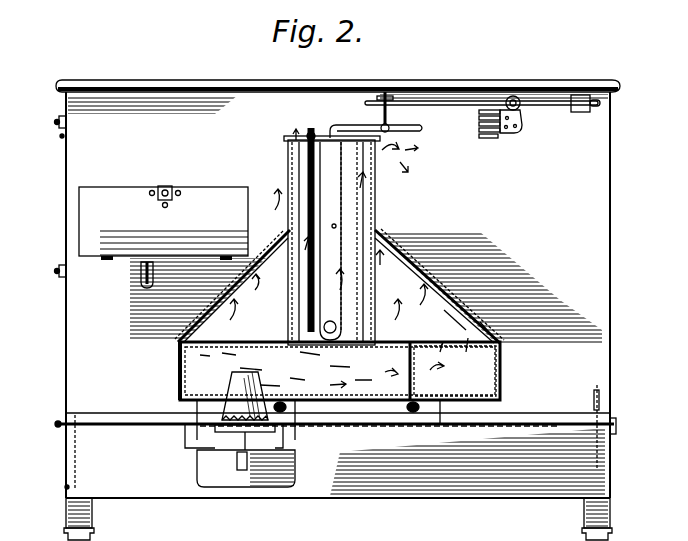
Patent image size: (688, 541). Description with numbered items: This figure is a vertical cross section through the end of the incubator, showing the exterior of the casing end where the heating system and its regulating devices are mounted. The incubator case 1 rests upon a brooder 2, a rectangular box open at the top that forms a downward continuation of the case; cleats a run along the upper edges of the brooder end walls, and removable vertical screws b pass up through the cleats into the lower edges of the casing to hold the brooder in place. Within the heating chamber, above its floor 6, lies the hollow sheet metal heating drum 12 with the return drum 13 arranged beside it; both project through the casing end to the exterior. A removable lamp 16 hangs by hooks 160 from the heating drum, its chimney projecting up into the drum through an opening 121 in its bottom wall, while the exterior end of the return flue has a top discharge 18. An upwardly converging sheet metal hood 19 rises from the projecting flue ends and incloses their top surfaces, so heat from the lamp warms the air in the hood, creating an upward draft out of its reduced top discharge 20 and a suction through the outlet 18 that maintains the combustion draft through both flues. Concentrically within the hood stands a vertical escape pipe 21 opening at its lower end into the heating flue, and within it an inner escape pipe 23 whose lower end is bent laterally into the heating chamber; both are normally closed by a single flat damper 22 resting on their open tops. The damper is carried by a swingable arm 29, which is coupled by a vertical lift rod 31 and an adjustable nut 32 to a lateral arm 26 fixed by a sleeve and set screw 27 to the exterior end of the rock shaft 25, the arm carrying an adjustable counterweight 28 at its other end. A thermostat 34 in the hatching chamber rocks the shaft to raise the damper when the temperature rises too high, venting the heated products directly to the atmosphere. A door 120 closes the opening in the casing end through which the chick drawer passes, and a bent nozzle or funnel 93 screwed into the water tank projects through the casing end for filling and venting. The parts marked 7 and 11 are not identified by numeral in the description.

The incubator case 1 is at (142, 82).
The brooder chamber 2 is at (555, 488).
The floor of the heating chamber 6 is at (80, 430).
The brackets 7 is at (300, 420).
The burner 11 is at (245, 411).
The heating drum 12 is at (340, 371).
The return drum 13 is at (455, 367).
The lamp 16 is at (246, 468).
The top discharge opening of return flue 18 is at (470, 350).
The hood 19 is at (460, 318).
The top discharge of hood 20 is at (287, 152).
The escape pipe 21 is at (356, 292).
The damper 22 is at (316, 140).
The inner escape pipe 23 is at (330, 230).
The rock shaft 25 is at (520, 114).
The lateral arm 26 is at (462, 104).
The sleeve and set screw 27 is at (522, 98).
The adjustable counterweight 28 is at (602, 86).
The damper carrying arm 29 is at (402, 157).
The lift rod 31 is at (388, 122).
The adjustable nut 32 is at (387, 94).
The thermostat 34 is at (488, 138).
The bent nozzle or funnel 93 is at (151, 286).
The door 120 is at (100, 205).
The opening in bottom wall of heating drum 121 is at (184, 350).
The hooks 160 is at (190, 420).
The cleats a is at (484, 420).
The removable vertical screws b is at (600, 424).